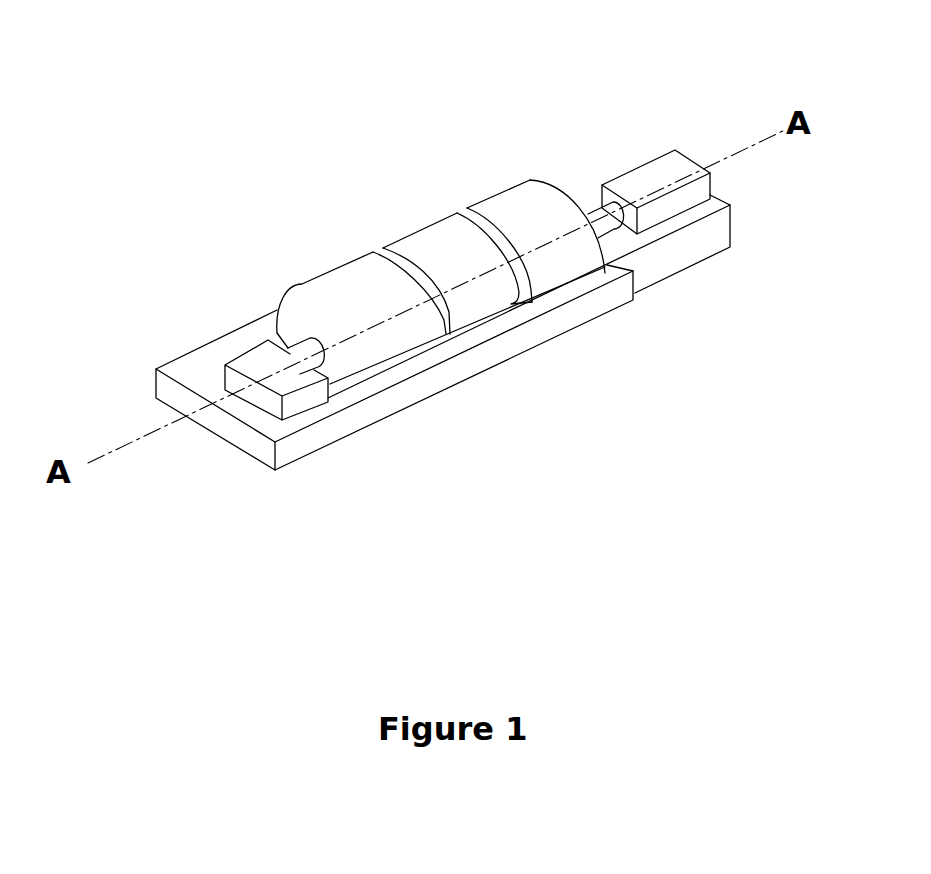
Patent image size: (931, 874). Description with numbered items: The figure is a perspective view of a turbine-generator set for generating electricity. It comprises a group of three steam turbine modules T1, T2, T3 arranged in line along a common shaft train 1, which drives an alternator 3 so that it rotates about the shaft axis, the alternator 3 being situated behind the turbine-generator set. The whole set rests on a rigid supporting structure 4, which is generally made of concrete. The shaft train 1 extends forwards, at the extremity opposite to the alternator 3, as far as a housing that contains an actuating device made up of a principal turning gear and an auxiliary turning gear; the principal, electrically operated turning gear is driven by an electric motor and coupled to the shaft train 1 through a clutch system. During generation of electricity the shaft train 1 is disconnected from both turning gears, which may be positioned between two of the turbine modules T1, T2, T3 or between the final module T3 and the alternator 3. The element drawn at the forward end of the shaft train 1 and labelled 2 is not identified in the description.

The shaft train 1 is at (322, 362).
The left bearing block 2 is at (253, 363).
The alternator 3 is at (652, 190).
The rigid supporting structure 4 is at (307, 442).
The turbine module T1 is at (347, 285).
The turbine module T2 is at (437, 245).
The turbine module T3 is at (527, 205).